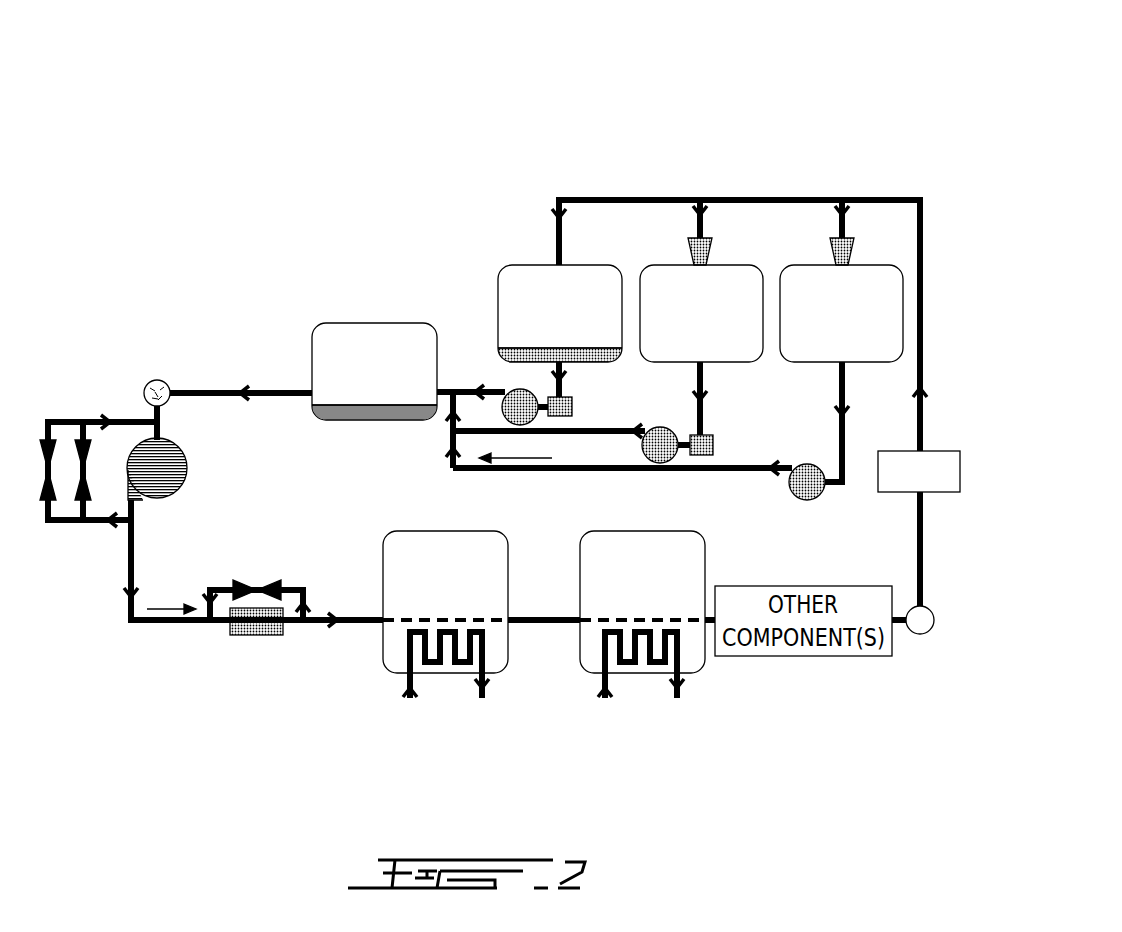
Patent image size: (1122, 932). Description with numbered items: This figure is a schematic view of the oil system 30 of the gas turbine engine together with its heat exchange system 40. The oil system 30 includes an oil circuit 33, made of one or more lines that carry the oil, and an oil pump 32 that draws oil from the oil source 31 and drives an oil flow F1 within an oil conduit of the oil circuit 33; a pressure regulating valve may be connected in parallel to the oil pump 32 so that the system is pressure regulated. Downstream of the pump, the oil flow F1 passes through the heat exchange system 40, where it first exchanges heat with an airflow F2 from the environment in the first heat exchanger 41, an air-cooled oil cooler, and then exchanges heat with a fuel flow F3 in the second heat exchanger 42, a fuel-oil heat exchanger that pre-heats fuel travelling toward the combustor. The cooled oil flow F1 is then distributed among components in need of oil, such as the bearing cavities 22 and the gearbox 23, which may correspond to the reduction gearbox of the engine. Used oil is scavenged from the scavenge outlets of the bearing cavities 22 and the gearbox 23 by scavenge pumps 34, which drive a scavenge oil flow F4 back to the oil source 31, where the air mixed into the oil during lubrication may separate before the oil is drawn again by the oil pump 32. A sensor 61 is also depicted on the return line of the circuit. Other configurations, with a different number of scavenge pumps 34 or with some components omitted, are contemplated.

The oil system 30 is at (745, 150).
The bearing cavity 22 is at (733, 265).
The gearbox 23 is at (527, 265).
The oil source 31 is at (373, 323).
The oil pump 32 is at (160, 487).
The oil circuit 33 is at (167, 623).
The scavenge pump 34 is at (513, 393).
The heat exchange system 40 is at (735, 688).
The first heat exchanger 41 is at (383, 660).
The second heat exchanger 42 is at (640, 531).
The sensor 61 is at (898, 492).
The oil flow F1 is at (162, 609).
The airflow F2 is at (403, 665).
The fuel flow F3 is at (602, 665).
The scavenge oil flow F4 is at (552, 458).